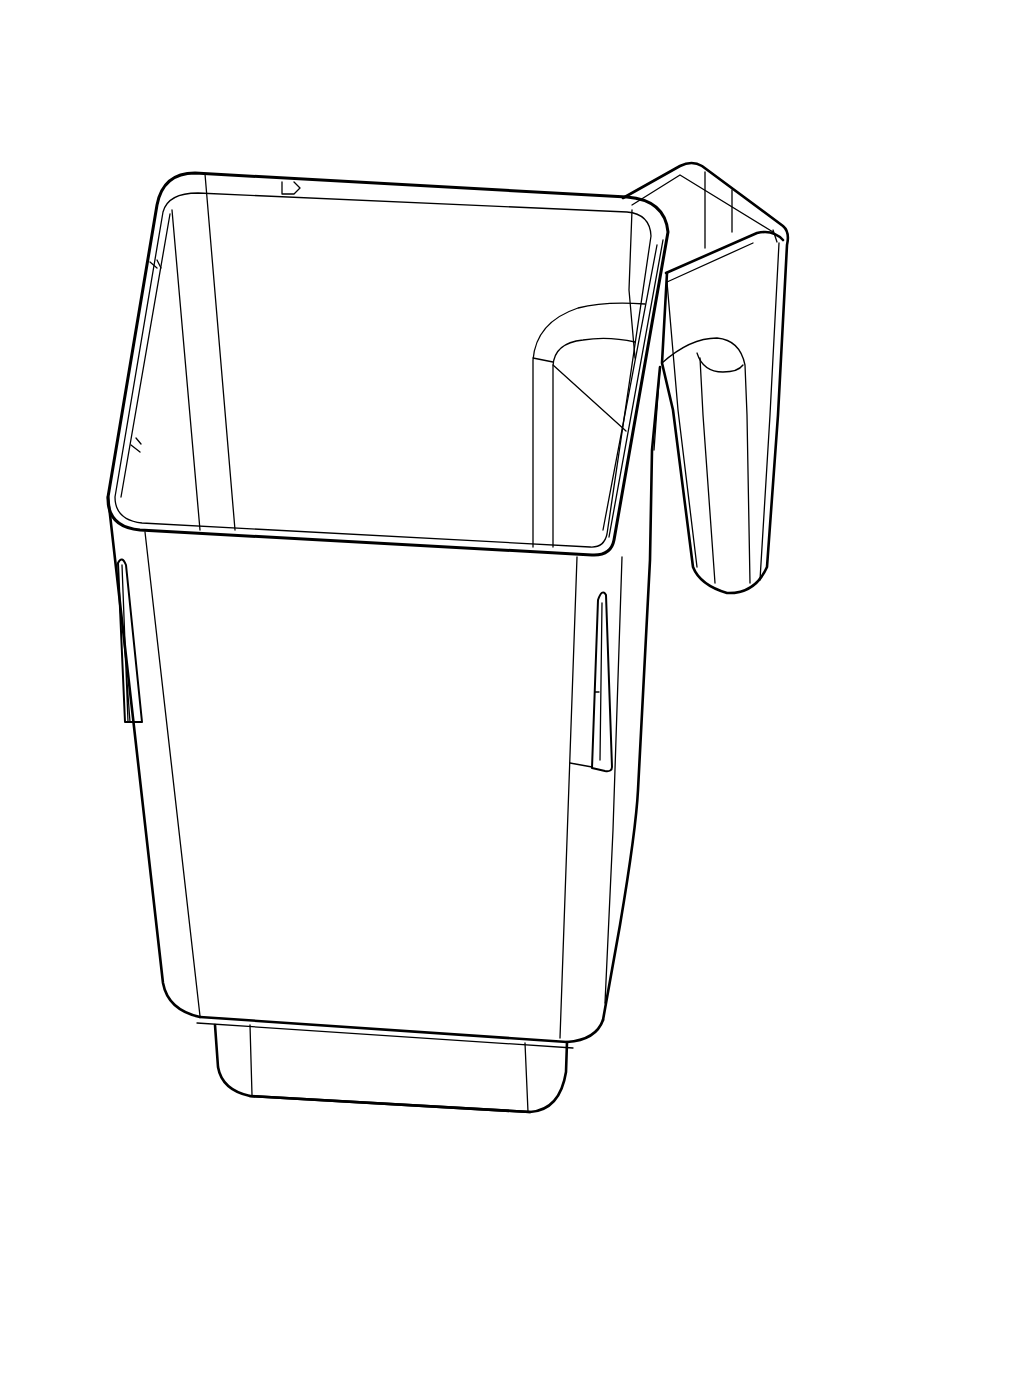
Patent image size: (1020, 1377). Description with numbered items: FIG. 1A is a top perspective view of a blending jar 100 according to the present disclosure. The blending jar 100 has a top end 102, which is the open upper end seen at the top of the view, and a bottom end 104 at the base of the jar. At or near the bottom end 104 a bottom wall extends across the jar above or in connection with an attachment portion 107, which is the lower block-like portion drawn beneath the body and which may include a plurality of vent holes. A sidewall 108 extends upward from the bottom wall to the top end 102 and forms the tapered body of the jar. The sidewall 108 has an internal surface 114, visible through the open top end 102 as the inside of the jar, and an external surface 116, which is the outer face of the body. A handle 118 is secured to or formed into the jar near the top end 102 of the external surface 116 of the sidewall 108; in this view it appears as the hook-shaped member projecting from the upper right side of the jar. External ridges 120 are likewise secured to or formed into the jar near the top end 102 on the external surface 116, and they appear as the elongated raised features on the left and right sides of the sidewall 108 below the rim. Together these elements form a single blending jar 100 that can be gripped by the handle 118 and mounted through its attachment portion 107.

The blending jar 100 is at (280, 138).
The top end 102 is at (127, 333).
The bottom end 104 is at (208, 1060).
The attachment portion 107 is at (370, 1077).
The sidewall 108 is at (213, 779).
The internal surface of the sidewall 114 is at (515, 252).
The external surface of the sidewall 116 is at (203, 880).
The handle 118 is at (787, 330).
The external ridges 120 is at (120, 688).